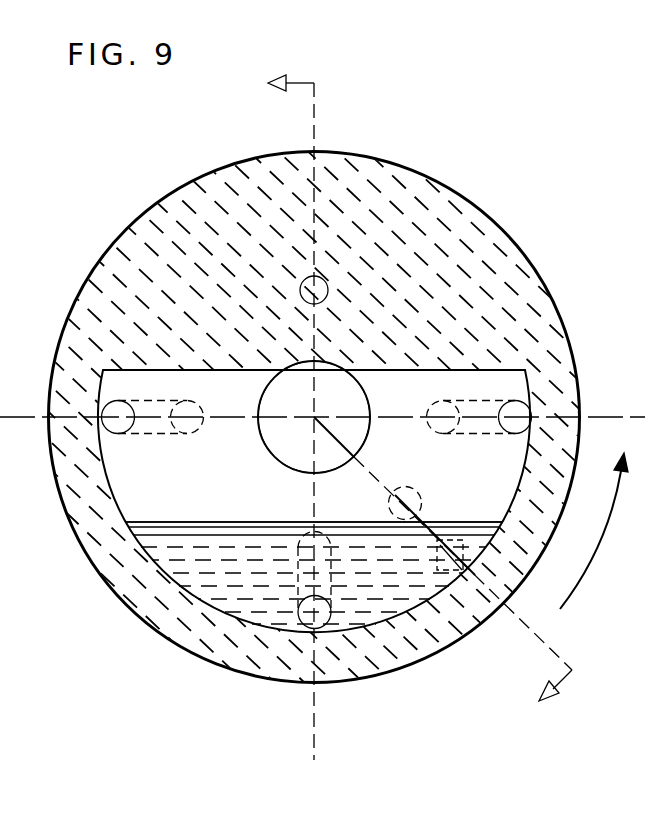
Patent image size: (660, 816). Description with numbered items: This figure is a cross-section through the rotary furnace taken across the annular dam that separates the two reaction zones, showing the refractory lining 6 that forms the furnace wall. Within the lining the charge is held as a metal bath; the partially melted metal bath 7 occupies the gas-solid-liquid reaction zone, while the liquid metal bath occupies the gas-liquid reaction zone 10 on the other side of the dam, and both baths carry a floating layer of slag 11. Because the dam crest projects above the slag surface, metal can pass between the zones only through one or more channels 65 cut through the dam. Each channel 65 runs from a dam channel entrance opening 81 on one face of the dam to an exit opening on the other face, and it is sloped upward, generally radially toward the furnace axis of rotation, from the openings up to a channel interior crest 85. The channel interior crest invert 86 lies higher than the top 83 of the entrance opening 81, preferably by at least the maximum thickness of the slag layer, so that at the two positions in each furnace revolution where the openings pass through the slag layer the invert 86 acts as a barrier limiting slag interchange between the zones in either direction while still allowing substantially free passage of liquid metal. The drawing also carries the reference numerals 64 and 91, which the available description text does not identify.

The refractory lining 6 is at (130, 598).
The partially melted metal bath 7 is at (187, 556).
The gas-liquid reaction zone 10 is at (322, 403).
The slag 11 is at (238, 530).
The central bore 64 is at (308, 445).
The channel 65 is at (477, 425).
The dam channel entrance opening 81 is at (112, 428).
The top of opening 83 is at (447, 538).
The channel interior crest 85 is at (327, 282).
The channel interior crest invert 86 is at (400, 522).
The bore wall 91 is at (363, 383).